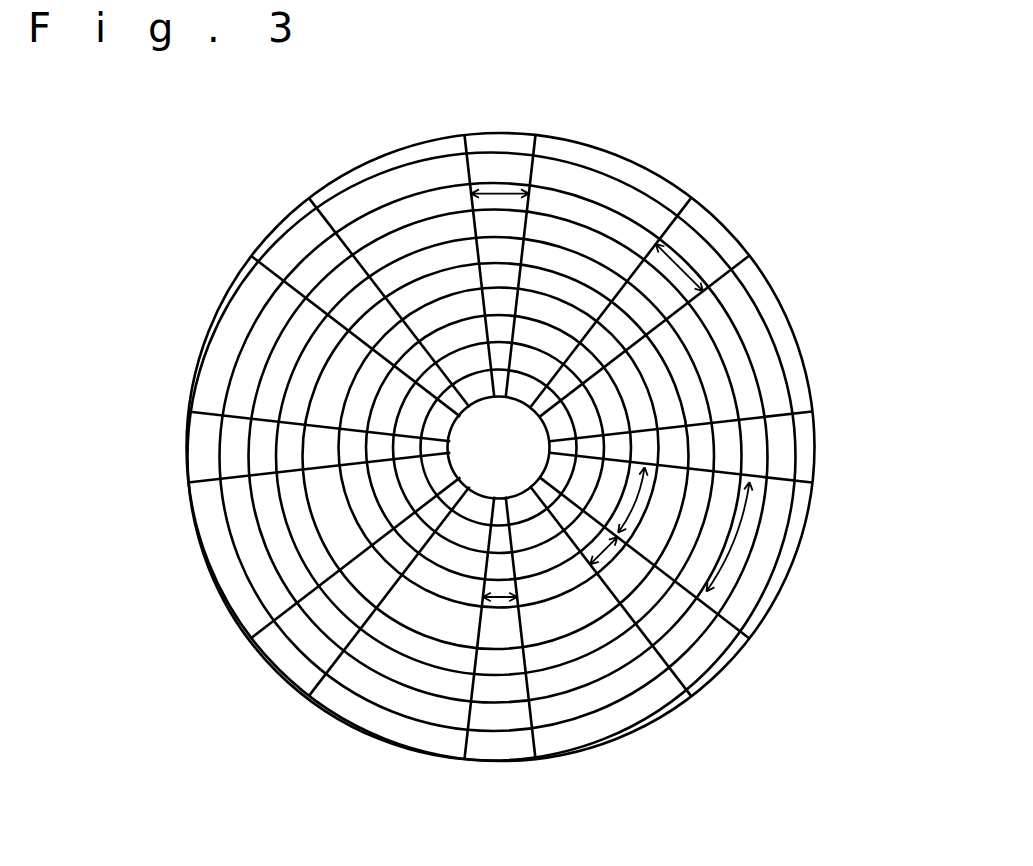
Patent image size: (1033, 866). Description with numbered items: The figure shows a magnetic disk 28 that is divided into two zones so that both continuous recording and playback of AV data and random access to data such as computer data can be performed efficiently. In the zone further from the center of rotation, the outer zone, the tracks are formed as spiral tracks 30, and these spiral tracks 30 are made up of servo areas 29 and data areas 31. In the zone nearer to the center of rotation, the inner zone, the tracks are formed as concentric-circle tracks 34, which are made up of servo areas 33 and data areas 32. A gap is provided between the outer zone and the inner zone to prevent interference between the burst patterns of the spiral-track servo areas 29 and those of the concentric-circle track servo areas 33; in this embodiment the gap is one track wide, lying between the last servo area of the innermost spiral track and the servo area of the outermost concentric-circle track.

The magnetic disk 28 is at (788, 338).
The servo areas 29 is at (683, 263).
The spiral tracks 30 is at (720, 338).
The data areas 31 is at (745, 512).
The data areas 32 is at (757, 590).
The servo areas 33 is at (613, 557).
The concentric-circle tracks 34 is at (447, 570).